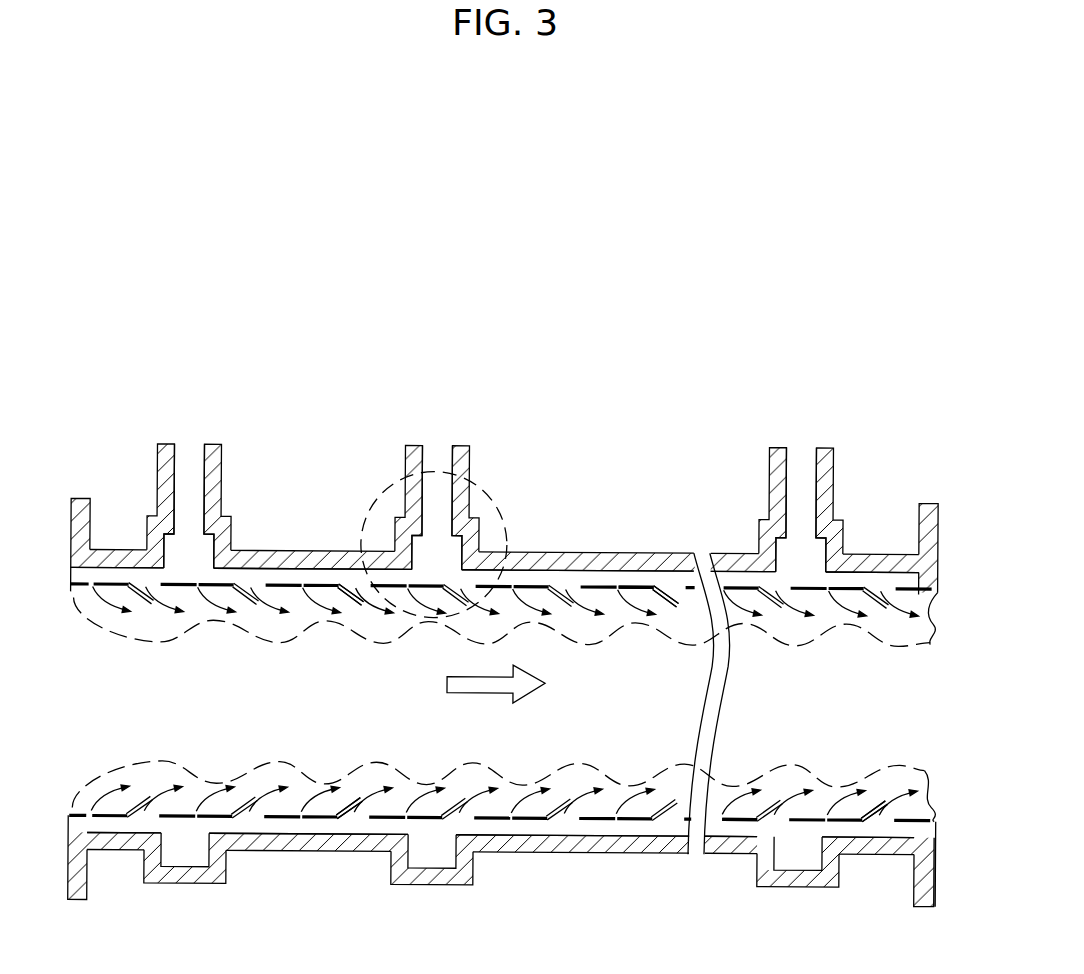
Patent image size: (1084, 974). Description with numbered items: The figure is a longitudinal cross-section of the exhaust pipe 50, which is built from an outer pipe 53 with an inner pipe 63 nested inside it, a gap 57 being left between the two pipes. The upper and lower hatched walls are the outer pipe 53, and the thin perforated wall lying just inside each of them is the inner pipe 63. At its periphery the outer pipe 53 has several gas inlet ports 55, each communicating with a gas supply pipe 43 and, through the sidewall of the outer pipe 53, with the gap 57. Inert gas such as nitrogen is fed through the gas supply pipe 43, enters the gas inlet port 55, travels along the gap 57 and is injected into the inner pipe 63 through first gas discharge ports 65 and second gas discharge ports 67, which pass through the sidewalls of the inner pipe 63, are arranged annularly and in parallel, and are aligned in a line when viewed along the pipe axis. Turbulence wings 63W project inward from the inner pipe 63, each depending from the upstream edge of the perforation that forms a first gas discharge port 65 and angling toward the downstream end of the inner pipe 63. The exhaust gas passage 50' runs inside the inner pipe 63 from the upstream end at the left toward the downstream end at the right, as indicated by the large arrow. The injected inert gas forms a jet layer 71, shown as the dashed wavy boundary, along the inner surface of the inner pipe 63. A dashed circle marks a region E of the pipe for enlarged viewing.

The exhaust pipe 50 is at (504, 603).
The exhaust gas passage 50' is at (496, 700).
The gas supply pipe 43 is at (221, 456).
The outer pipe 53 is at (256, 558).
The gas inlet port 55 is at (188, 550).
The gap 57 is at (281, 573).
The inner pipe 63 is at (320, 585).
The turbulence wing 63W is at (347, 585).
The first gas discharge port 65 is at (666, 587).
The second gas discharge port 67 is at (617, 584).
The jet layer 71 is at (863, 635).
The enlarged portion E is at (494, 503).